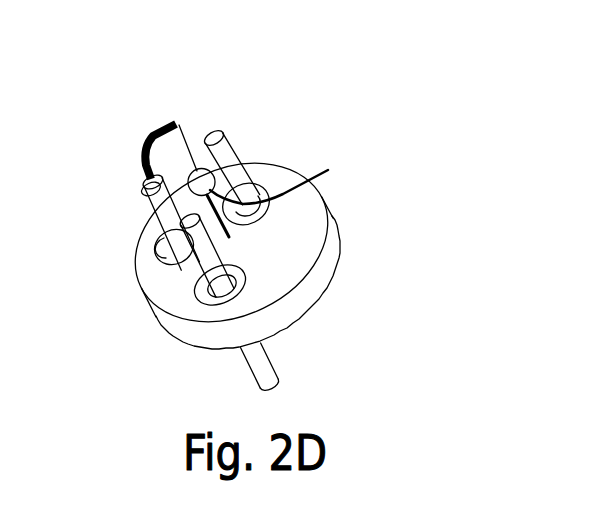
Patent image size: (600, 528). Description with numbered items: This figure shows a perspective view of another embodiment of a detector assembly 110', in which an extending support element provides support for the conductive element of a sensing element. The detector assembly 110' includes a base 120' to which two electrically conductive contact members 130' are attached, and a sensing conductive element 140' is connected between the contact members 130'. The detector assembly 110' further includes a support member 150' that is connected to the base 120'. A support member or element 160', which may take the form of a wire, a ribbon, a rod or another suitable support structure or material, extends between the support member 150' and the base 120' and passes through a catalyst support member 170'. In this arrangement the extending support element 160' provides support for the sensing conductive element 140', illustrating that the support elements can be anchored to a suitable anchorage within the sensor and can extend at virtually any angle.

The detector assembly 110' is at (172, 273).
The base 120' is at (244, 267).
The electrically conductive contact members 130' is at (202, 205).
The sensing conductive element 140' is at (127, 199).
The support member 150' is at (103, 159).
The support member or element 160' is at (177, 122).
The catalyst support member 170' is at (281, 186).